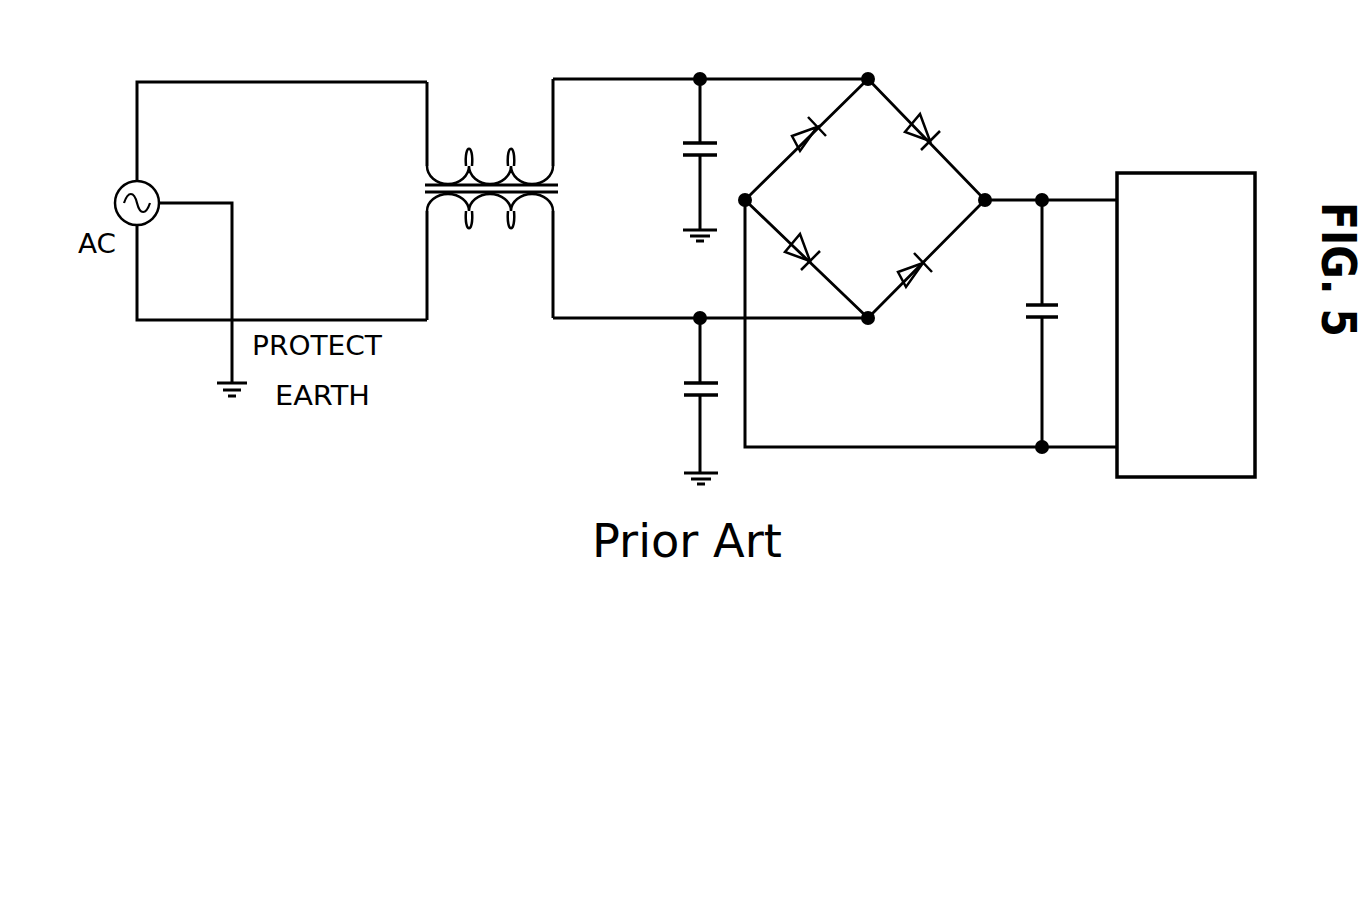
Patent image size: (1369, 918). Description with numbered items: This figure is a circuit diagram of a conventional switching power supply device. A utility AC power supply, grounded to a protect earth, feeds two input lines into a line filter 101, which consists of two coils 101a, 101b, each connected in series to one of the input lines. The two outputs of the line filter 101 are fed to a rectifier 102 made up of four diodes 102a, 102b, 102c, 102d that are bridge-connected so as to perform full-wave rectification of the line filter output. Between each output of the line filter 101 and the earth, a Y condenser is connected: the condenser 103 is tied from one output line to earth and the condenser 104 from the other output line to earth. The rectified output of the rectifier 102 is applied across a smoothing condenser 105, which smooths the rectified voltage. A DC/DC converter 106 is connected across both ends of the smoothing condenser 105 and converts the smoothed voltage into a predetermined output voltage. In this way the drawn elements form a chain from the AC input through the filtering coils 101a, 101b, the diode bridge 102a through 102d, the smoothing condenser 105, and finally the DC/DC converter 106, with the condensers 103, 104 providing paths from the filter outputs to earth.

The line filter 101 is at (489, 176).
The coil 101a is at (495, 183).
The coil 101b is at (498, 194).
The rectifier 102 is at (873, 177).
The diode 102a is at (812, 146).
The diode 102b is at (918, 133).
The diode 102c is at (811, 256).
The diode 102d is at (921, 284).
The condenser 103 is at (697, 152).
The condenser 104 is at (698, 392).
The smoothing condenser 105 is at (1037, 310).
The DC/DC converter 106 is at (1185, 190).